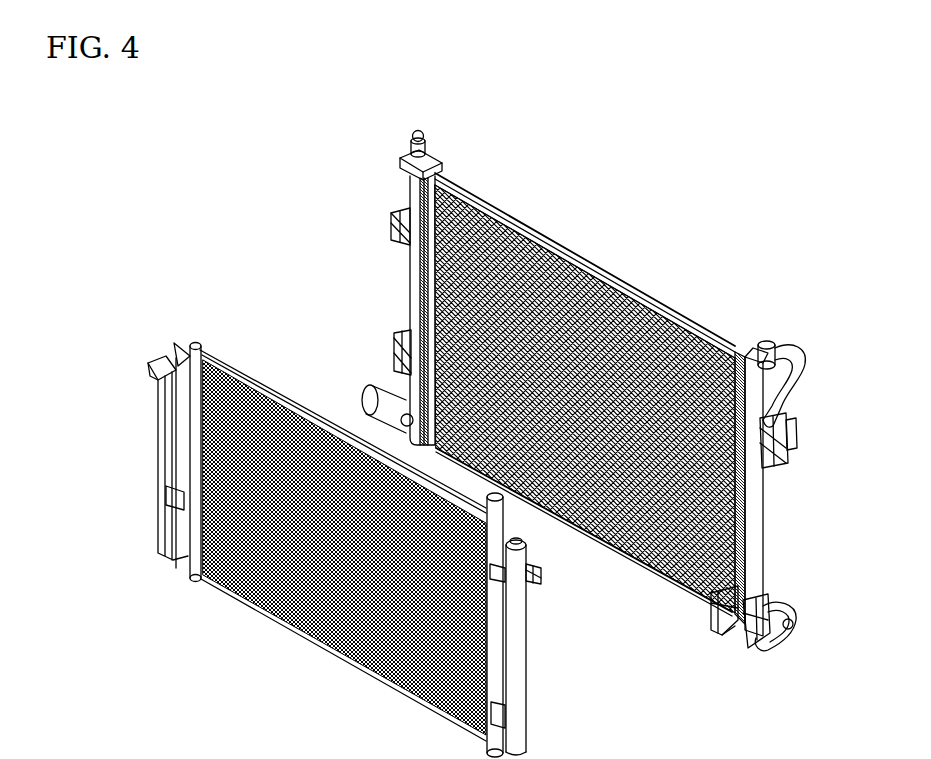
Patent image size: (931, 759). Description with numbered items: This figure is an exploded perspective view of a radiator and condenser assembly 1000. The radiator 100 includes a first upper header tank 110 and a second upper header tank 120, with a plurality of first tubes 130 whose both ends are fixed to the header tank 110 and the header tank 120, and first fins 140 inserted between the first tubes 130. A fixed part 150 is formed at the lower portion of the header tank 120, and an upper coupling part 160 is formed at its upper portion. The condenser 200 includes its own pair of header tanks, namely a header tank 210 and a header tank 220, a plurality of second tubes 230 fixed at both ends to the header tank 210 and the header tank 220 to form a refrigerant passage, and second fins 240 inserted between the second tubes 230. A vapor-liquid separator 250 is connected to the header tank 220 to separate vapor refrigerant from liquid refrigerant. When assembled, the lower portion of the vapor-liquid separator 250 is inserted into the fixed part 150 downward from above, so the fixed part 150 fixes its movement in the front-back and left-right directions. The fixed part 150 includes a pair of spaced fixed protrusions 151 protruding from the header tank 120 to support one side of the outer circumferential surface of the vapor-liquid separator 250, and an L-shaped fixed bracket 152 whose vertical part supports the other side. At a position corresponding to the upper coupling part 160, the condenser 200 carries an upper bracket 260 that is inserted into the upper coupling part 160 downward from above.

The radiator and condenser assembly 1000 is at (315, 136).
The radiator 100 is at (582, 236).
The 1-1-th header tank 110 is at (421, 150).
The 1-2-th header tank 120 is at (744, 333).
The first tubes 130 is at (472, 200).
The first fins 140 is at (512, 210).
The fixed part 150 is at (680, 667).
The fixed protrusions 151 is at (740, 623).
The fixed bracket 152 is at (712, 622).
The upper coupling part 160 is at (783, 428).
The condenser 200 is at (276, 376).
The 2-1-th header tank 210 is at (197, 570).
The 2-2-th header tank 220 is at (478, 737).
The second tubes 230 is at (277, 610).
The second fins 240 is at (316, 637).
The vapor-liquid separator 250 is at (520, 682).
The upper bracket 260 is at (524, 565).